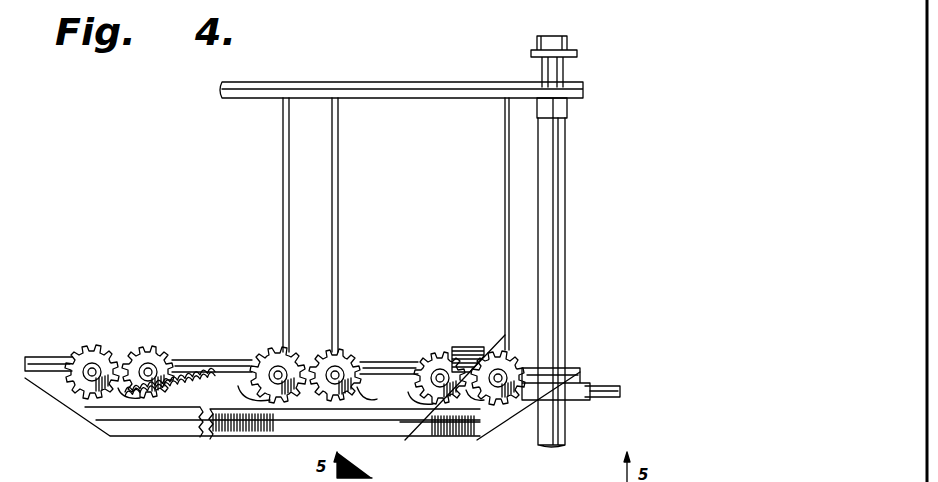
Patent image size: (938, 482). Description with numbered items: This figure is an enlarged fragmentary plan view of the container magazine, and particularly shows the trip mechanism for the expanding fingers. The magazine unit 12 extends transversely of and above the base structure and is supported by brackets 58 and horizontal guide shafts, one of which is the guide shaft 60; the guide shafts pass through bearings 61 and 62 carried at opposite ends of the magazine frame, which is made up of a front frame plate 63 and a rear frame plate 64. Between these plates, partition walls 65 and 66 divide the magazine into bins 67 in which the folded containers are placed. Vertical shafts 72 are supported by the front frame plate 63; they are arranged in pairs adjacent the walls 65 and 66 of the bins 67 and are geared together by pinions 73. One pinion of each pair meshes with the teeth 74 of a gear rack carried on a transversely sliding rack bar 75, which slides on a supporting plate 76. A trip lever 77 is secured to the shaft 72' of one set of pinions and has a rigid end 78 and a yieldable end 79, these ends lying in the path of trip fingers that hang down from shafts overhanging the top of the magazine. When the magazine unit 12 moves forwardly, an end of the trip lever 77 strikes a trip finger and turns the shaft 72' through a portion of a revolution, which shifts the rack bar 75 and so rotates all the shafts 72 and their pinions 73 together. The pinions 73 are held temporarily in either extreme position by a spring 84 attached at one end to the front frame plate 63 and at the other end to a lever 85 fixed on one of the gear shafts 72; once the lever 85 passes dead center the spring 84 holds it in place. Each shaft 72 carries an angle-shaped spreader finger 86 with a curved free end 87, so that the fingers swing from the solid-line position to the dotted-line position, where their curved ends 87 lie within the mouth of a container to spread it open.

The magazine unit 12 is at (639, 73).
The bracket 58 is at (532, 53).
The horizontal guide shaft 60 is at (566, 212).
The bearing 61 is at (569, 113).
The bearing 62 is at (600, 392).
The front frame plate 63 is at (580, 378).
The rear frame plate 64 is at (507, 90).
The partition wall 65 is at (284, 178).
The partition wall 66 is at (338, 170).
The bin 67 is at (403, 108).
The shaft 72 is at (332, 352).
The shaft 72' is at (437, 362).
The pinion 73 is at (76, 350).
The teeth of gear rack 74 is at (135, 406).
The rack bar 75 is at (262, 433).
The supporting plate 76 is at (468, 439).
The trip lever 77 is at (466, 346).
The rigid end 78 is at (412, 431).
The yieldable end 79 is at (471, 361).
The spring 84 is at (190, 372).
The lever 85 is at (151, 365).
The spreader finger 86 is at (356, 355).
The curved free end 87 is at (346, 352).